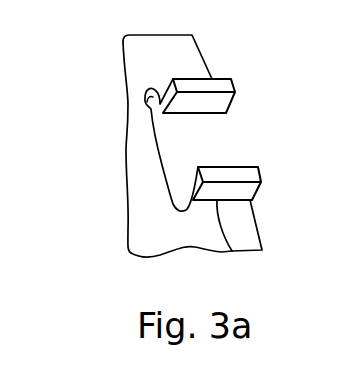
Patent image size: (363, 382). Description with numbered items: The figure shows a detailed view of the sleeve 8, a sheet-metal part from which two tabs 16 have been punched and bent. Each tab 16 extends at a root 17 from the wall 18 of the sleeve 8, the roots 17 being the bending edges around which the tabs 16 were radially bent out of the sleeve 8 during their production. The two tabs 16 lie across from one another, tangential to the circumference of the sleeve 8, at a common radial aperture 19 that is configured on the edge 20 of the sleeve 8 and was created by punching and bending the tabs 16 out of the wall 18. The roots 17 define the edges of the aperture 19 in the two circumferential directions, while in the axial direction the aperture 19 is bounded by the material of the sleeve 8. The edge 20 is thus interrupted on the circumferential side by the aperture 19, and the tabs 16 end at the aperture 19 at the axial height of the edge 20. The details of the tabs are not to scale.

The sleeve 8 is at (135, 50).
The tabs 16 is at (220, 86).
The root 17 is at (231, 252).
The wall 18 is at (155, 157).
The radial aperture 19 is at (214, 138).
The edge 20 is at (258, 238).